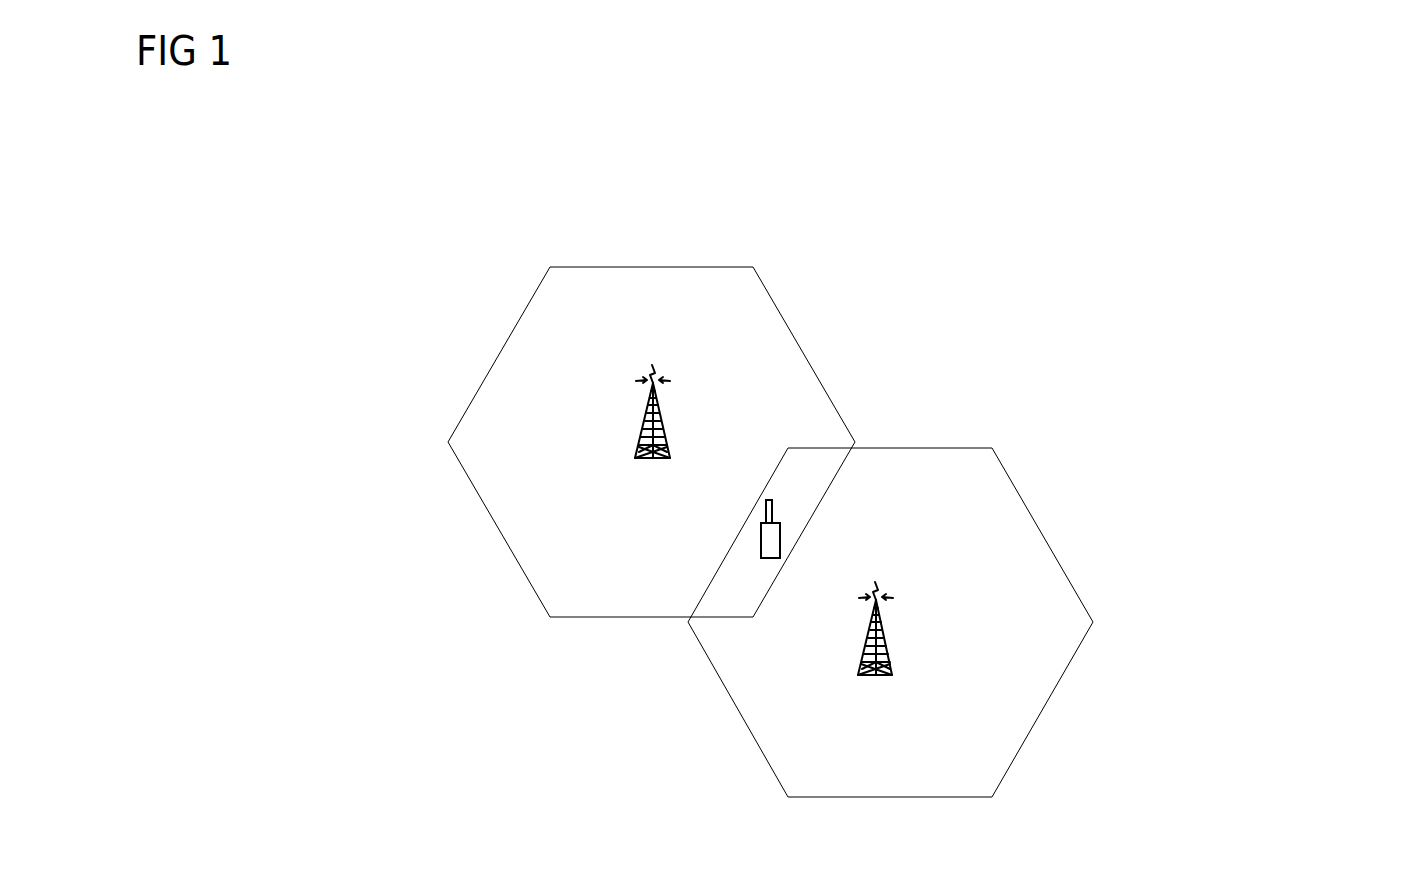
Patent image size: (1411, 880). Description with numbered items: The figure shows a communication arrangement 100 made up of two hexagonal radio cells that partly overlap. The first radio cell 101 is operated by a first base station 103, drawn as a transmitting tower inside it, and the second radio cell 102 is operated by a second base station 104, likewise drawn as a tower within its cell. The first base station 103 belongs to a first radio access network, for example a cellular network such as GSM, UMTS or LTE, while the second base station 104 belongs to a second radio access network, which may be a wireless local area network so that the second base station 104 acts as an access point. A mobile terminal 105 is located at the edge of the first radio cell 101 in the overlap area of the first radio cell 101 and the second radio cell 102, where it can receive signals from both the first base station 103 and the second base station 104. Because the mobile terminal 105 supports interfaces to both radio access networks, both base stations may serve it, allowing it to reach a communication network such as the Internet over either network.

The communication arrangement 100 is at (1303, 120).
The first radio cell 101 is at (773, 303).
The second radio cell 102 is at (980, 442).
The first base station 103 is at (665, 422).
The second base station 104 is at (885, 633).
The mobile terminal 105 is at (781, 532).